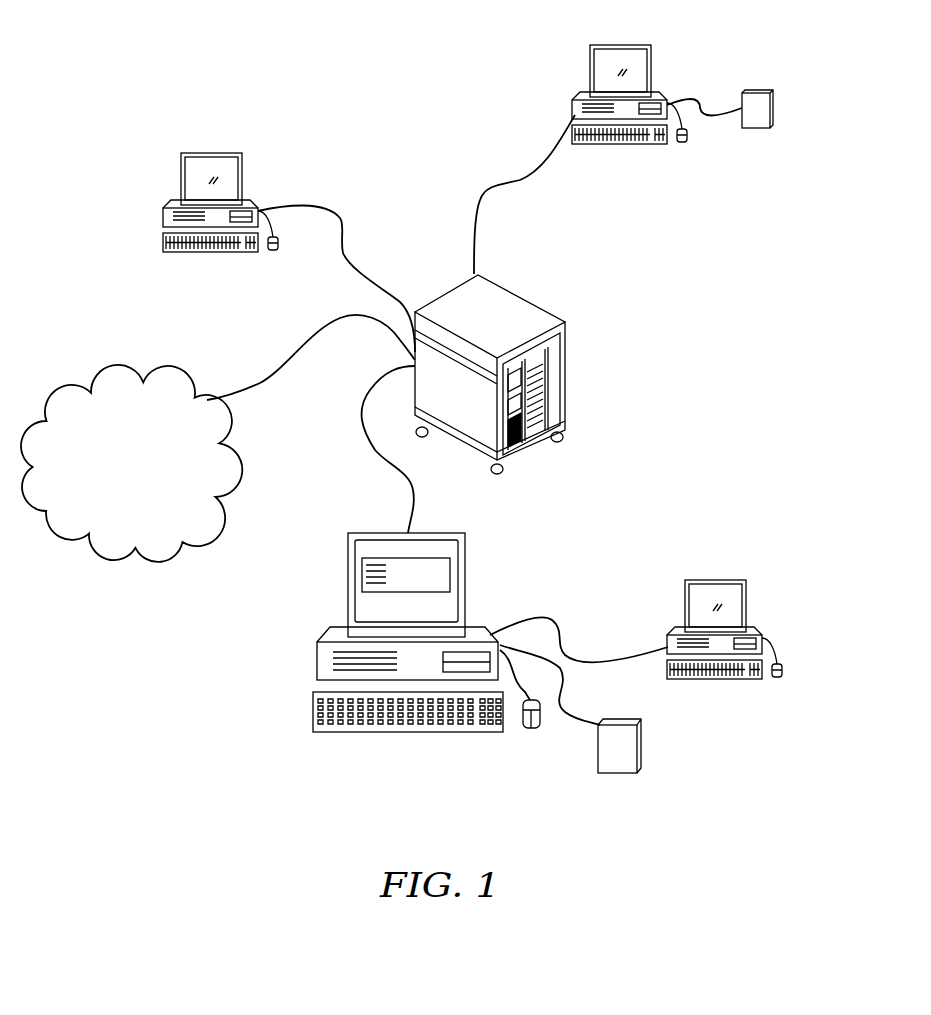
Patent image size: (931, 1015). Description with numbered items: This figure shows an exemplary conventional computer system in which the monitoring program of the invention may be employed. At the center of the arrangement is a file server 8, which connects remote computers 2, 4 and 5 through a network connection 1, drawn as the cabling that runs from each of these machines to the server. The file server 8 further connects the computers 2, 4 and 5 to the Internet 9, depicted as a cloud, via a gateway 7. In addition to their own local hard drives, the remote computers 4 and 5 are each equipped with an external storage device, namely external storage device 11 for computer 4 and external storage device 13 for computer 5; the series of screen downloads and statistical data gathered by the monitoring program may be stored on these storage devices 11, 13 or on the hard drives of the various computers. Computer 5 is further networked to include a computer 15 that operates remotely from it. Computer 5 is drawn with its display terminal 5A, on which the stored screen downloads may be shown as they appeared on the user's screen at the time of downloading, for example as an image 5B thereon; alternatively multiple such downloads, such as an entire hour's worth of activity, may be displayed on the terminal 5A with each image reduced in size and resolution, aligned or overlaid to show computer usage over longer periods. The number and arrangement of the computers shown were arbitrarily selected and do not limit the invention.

The network connection 1 is at (343, 222).
The remote computer 2 is at (168, 199).
The remote computer 4 is at (580, 95).
The remote computer 5 is at (482, 628).
The display terminal 5A is at (348, 574).
The image 5B is at (447, 558).
The gateway 7 is at (273, 368).
The file server 8 is at (543, 310).
The Internet 9 is at (165, 556).
The external storage device 11 is at (757, 88).
The external storage device 13 is at (645, 742).
The computer 15 is at (717, 580).